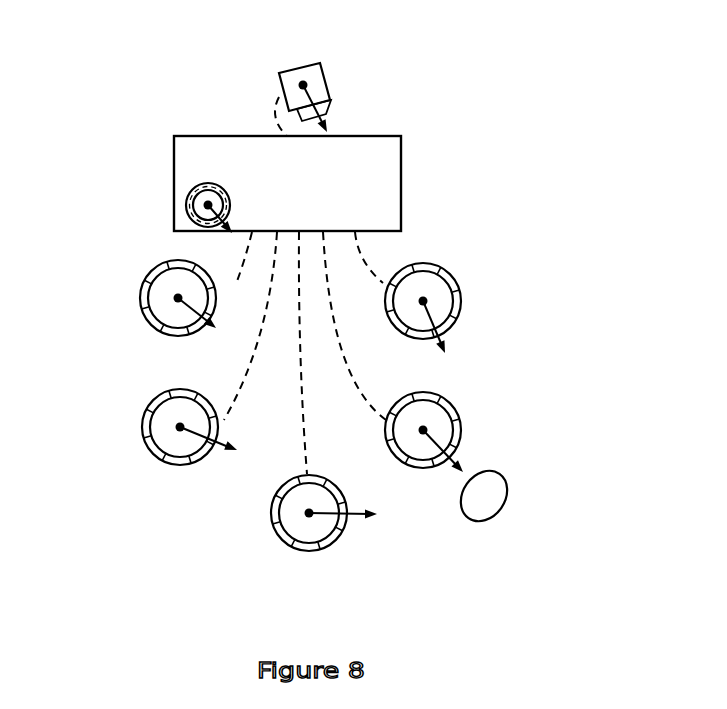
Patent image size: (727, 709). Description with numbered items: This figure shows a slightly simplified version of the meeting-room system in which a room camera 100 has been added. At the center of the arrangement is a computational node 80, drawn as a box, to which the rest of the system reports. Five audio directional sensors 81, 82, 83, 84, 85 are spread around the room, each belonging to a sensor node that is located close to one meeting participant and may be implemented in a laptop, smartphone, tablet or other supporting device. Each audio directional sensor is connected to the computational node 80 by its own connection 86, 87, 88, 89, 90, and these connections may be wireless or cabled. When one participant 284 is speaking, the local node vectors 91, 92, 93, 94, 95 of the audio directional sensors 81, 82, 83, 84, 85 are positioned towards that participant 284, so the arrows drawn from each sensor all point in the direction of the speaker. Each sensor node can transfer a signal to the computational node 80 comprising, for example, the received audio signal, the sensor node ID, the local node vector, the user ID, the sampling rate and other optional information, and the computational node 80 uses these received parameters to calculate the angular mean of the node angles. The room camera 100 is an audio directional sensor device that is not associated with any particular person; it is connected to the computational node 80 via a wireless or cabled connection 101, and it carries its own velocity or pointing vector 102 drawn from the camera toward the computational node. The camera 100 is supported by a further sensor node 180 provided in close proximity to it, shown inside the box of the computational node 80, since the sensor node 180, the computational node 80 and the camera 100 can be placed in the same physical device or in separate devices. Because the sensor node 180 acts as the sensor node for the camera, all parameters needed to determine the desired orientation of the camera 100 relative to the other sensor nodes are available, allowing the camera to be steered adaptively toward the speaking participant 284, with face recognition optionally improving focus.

The computational node 80 is at (401, 182).
The room camera 100 is at (320, 63).
The connection 101 is at (274, 106).
The satellite velocity vector 102 is at (327, 103).
The sensor node 180 is at (190, 196).
The audio directional sensor 81 is at (172, 261).
The audio directional sensor 82 is at (142, 420).
The audio directional sensor 83 is at (281, 494).
The audio directional sensor 84 is at (447, 398).
The audio directional sensor 85 is at (415, 263).
The connection 86 is at (228, 285).
The connection 87 is at (233, 415).
The connection 88 is at (302, 466).
The connection 89 is at (342, 383).
The connection 90 is at (378, 275).
The local node vector 91 is at (212, 326).
The local node vector 92 is at (198, 437).
The local node vector 93 is at (350, 518).
The local node vector 94 is at (447, 460).
The local node vector 95 is at (440, 333).
The participant 284 is at (503, 475).